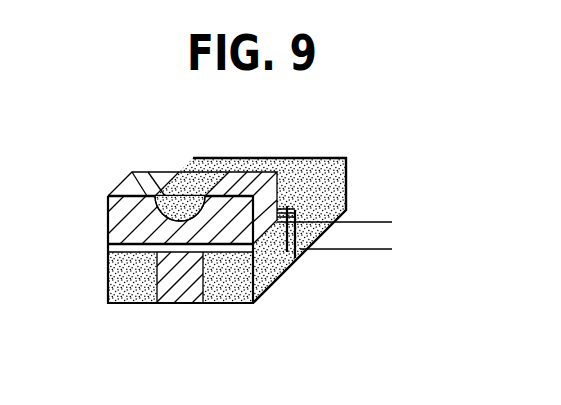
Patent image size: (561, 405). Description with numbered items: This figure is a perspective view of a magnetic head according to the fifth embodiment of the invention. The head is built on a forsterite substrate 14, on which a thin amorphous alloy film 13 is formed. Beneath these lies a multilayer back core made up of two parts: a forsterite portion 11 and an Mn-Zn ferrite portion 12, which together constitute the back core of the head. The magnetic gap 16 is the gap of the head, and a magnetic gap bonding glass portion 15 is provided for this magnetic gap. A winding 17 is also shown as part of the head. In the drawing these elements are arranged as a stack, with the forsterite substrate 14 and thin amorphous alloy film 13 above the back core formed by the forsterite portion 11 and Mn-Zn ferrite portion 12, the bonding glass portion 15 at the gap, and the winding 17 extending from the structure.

The forsterite portion 11 is at (173, 298).
The Mn-Zn ferrite portion 12 is at (340, 180).
The thin amorphous alloy film 13 is at (110, 251).
The forsterite substrate 14 is at (111, 224).
The magnetic gap bonding glass portion 15 is at (184, 174).
The magnetic gap 16 is at (180, 243).
The winding 17 is at (397, 222).